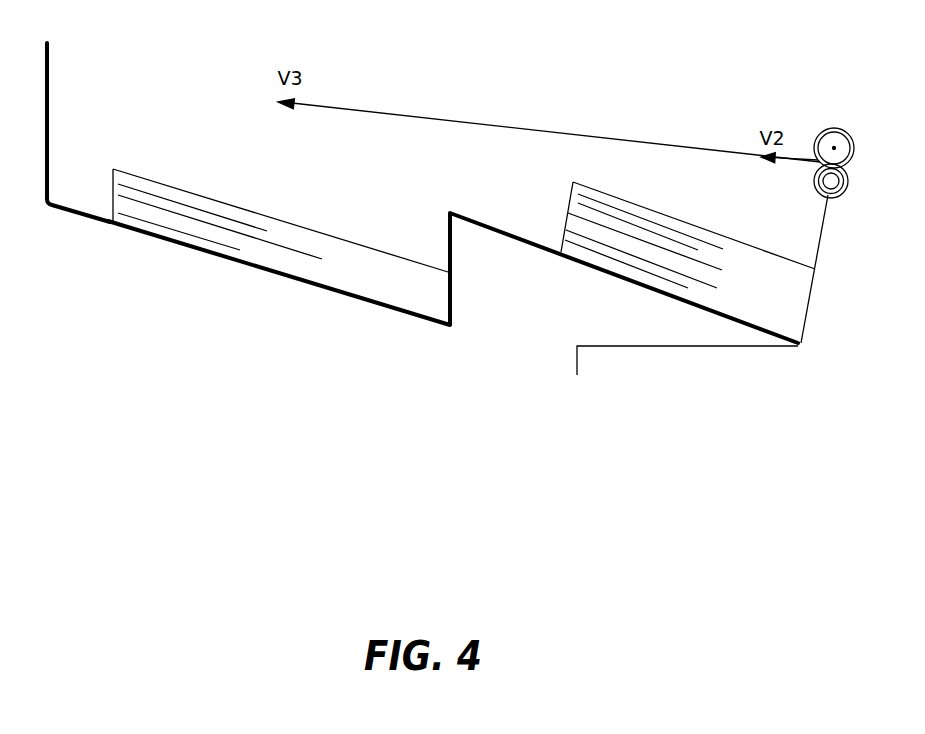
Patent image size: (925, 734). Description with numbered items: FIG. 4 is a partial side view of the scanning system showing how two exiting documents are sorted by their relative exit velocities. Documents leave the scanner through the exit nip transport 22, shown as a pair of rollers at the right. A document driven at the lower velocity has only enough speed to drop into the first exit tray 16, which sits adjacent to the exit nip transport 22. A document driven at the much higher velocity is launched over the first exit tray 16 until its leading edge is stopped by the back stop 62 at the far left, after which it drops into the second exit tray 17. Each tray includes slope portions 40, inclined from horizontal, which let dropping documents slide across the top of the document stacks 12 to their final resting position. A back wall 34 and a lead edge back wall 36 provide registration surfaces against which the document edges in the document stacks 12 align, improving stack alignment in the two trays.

The document stacks 12 is at (228, 202).
The first exit tray 16 is at (568, 259).
The second exit tray 17 is at (158, 235).
The exit nip transport 22 is at (831, 114).
The back wall 34 is at (820, 225).
The lead edge back wall 36 is at (448, 232).
The slope portions 40 is at (86, 208).
The back stop 62 is at (50, 73).